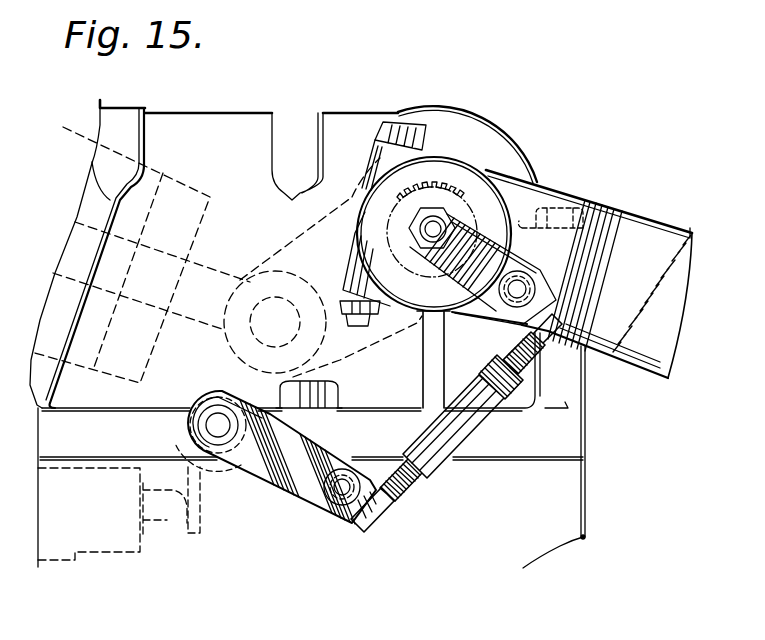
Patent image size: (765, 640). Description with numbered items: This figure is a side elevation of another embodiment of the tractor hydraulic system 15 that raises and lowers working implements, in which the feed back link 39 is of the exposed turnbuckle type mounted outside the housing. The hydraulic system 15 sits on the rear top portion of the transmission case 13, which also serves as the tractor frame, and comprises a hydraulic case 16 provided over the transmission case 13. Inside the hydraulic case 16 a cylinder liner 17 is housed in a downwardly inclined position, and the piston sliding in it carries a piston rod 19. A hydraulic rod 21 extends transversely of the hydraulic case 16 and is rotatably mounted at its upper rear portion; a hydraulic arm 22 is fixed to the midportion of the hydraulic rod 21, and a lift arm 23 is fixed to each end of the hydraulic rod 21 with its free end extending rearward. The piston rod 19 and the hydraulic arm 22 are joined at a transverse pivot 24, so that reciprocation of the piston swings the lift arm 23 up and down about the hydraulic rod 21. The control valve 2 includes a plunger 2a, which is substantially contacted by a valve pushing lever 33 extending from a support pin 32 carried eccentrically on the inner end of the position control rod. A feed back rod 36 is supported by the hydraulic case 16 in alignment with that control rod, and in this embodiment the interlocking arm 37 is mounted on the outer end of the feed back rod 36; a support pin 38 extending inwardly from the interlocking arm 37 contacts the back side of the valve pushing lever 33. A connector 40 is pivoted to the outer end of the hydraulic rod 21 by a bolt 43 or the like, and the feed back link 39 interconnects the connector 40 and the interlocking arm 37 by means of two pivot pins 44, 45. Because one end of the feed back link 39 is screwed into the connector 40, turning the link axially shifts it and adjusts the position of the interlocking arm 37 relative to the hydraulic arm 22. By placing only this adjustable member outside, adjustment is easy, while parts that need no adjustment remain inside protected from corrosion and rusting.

The control valve 2 is at (110, 550).
The plunger 2a is at (167, 513).
The transmission case 13 is at (585, 500).
The hydraulic system 15 is at (216, 127).
The hydraulic case 16 is at (192, 117).
The cylinder liner 17 is at (120, 254).
The piston rod 19 is at (230, 243).
The hydraulic rod 21 is at (393, 237).
The hydraulic arm 22 is at (292, 243).
The lift arm 23 is at (616, 202).
The transverse pivot 24 is at (235, 335).
The support pin 32 is at (197, 397).
The valve pushing lever 33 is at (200, 500).
The feed back rod 36 is at (218, 415).
The interlocking arm 37 is at (291, 490).
The support pin 38 is at (212, 470).
The feed back link 39 is at (438, 468).
The connector 40 is at (482, 228).
The bolt 43 is at (431, 242).
The pivot pin 44 is at (338, 508).
The pivot pin 45 is at (510, 309).